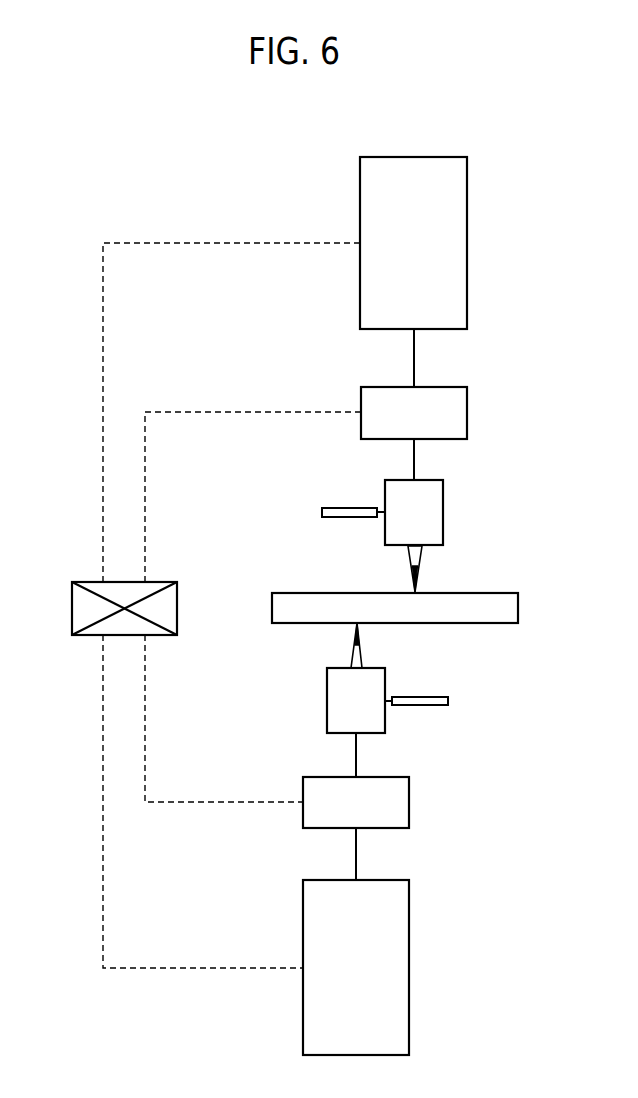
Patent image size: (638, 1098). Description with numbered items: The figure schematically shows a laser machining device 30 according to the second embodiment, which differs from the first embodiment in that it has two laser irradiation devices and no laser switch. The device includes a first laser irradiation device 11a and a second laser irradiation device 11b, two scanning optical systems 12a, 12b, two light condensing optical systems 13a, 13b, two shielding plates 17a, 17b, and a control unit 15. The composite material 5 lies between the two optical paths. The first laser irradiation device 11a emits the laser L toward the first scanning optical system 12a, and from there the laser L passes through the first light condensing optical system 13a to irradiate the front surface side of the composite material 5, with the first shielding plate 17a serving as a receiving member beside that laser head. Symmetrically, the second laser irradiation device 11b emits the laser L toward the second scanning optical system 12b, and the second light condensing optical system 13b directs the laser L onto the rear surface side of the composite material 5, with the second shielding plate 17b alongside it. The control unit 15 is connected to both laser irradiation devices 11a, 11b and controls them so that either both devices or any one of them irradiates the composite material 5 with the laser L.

The laser machining device 30 is at (529, 153).
The first laser irradiation device 11a is at (409, 968).
The second laser irradiation device 11b is at (467, 243).
The first scanning optical system 12a is at (372, 777).
The second scanning optical system 12b is at (467, 412).
The first light condensing optical system 13a is at (385, 722).
The second light condensing optical system 13b is at (443, 513).
The first shielding plate 17a is at (426, 695).
The second shielding plate 17b is at (347, 507).
The composite material 5 is at (356, 592).
The laser L is at (419, 563).
The control unit 15 is at (72, 607).